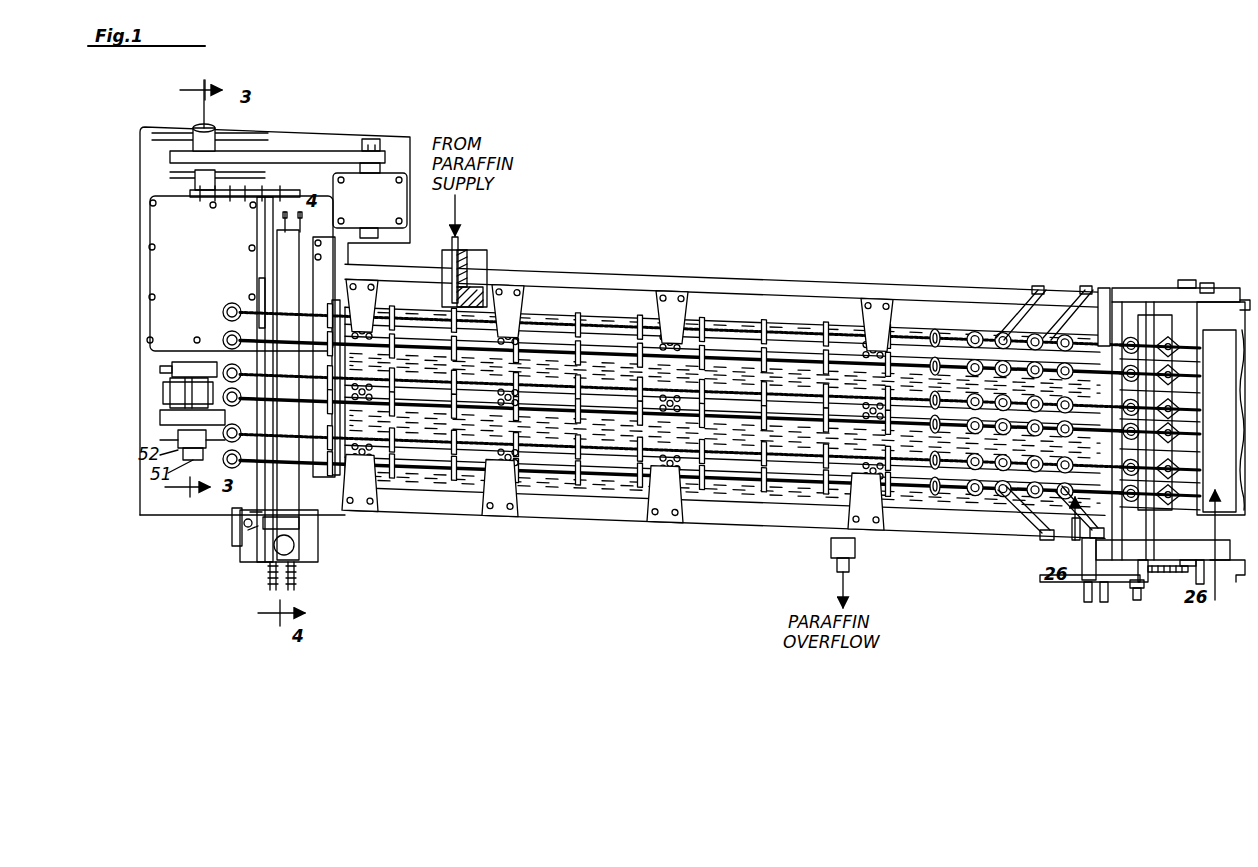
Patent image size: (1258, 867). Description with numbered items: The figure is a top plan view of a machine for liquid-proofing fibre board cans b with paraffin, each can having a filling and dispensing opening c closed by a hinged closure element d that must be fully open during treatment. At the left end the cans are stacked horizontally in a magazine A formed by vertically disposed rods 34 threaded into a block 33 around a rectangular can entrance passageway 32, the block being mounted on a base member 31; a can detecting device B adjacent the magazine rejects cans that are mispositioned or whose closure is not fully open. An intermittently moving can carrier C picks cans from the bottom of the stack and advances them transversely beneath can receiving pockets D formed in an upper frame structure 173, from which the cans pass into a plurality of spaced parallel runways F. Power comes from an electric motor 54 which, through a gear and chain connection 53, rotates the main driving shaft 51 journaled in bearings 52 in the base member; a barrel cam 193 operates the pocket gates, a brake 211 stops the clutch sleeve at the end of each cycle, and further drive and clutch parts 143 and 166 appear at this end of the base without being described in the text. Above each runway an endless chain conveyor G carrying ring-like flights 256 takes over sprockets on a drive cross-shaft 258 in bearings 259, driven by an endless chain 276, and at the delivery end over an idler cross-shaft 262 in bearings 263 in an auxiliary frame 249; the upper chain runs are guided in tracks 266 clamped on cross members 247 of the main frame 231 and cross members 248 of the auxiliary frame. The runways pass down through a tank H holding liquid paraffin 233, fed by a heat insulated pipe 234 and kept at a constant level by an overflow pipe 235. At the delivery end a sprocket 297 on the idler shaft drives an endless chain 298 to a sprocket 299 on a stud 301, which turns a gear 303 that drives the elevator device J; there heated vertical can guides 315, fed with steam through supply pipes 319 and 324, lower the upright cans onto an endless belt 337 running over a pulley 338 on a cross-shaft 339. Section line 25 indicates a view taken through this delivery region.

The base member 31 is at (138, 233).
The can entrance passageway 32 is at (280, 528).
The block 33 is at (252, 548).
The vertically disposed rods 34 is at (304, 528).
The main driving shaft 51 is at (203, 122).
The bearings 52 is at (212, 132).
The gear and chain connection 53 is at (312, 160).
The electric motor 54 is at (370, 205).
The lever bar 143 is at (160, 418).
The cover plate 166 is at (156, 215).
The upper frame structure 173 is at (290, 246).
The barrel cam 193 is at (165, 394).
The brake 211 is at (170, 368).
The main frame 231 is at (740, 275).
The liquid paraffin 233 is at (556, 310).
The heat insulated pipe 234 is at (463, 243).
The overflow pipe 235 is at (836, 560).
The cross members 247 is at (618, 521).
The cross members 248 is at (1049, 318).
The auxiliary frame 249 is at (1187, 290).
The ring-like flights 256 is at (230, 308).
The drive cross-shaft 258 is at (262, 284).
The bearings 259 is at (262, 224).
The idler cross-shaft 262 is at (1098, 298).
The bearings 263 is at (1082, 548).
The track 266 is at (548, 432).
The endless chain 276 is at (320, 178).
The sprocket 297 is at (1088, 583).
The endless chain 298 is at (1108, 584).
The sprocket 299 is at (1140, 584).
The stud 301 is at (1141, 584).
The gear 303 is at (1172, 568).
The vertical can guides 315 is at (1205, 390).
The steam inlet supply pipe 319 is at (1133, 300).
The steam inlet supply pipe 324 is at (1180, 406).
The endless belt 337 is at (1218, 334).
The pulley 338 is at (1212, 292).
The cross-shaft 339 is at (1168, 282).
The section line 25 is at (1018, 450).
The magazine A is at (303, 542).
The can detecting device B is at (292, 552).
The can carrier C is at (298, 588).
The can receiving pockets D is at (314, 410).
The runways F is at (718, 482).
The conveyor G is at (319, 436).
The tank H is at (646, 490).
The elevator device J is at (1148, 330).
The can b is at (272, 542).
The filling and dispensing opening c is at (302, 228).
The hinged closure element d is at (250, 528).